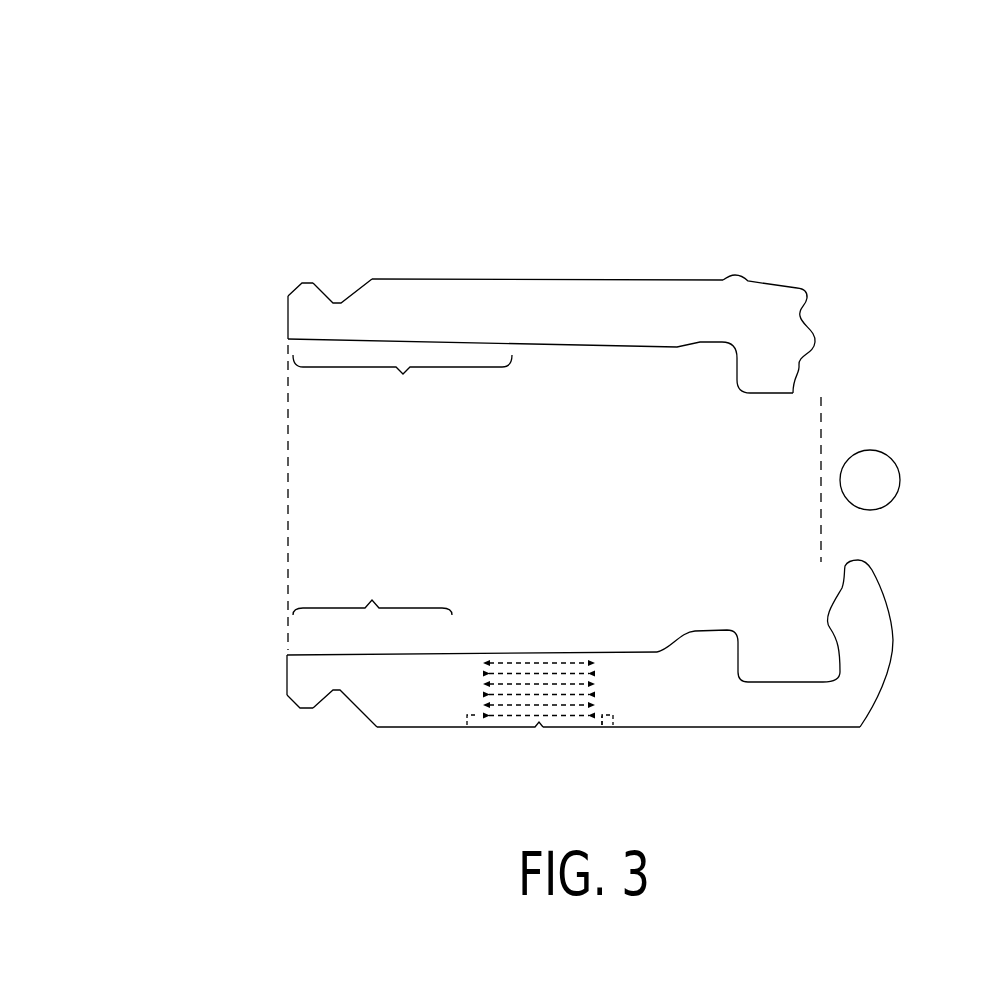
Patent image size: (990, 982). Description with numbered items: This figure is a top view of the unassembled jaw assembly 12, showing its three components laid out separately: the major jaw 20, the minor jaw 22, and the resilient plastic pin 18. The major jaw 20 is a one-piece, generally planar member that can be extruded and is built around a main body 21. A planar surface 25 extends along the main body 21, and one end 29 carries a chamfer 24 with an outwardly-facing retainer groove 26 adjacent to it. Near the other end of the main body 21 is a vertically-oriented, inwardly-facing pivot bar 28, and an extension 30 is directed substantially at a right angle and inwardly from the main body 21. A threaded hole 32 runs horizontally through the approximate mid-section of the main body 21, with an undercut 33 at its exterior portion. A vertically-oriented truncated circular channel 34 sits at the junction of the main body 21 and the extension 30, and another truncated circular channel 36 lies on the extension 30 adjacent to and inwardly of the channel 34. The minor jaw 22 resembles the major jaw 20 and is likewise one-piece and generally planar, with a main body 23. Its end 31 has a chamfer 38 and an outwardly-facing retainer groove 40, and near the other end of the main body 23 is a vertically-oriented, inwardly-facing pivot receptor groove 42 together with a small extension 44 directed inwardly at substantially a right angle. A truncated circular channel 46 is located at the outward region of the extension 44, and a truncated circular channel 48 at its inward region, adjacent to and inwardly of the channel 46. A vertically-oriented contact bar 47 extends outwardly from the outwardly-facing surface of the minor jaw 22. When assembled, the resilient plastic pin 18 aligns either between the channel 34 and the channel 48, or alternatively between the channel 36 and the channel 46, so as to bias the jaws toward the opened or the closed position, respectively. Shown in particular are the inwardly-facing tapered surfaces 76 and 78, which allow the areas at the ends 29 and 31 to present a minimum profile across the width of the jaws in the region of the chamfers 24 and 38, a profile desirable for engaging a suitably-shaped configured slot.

The jaw assembly 12 is at (226, 143).
The resilient plastic pin 18 is at (880, 468).
The major jaw 20 is at (681, 741).
The main body 21 is at (698, 703).
The minor jaw 22 is at (624, 266).
The main body 23 is at (650, 312).
The chamfer 24 is at (290, 700).
The planar surface 25 is at (812, 730).
The retainer groove 26 is at (335, 693).
The pivot bar 28 is at (715, 652).
The end 29 is at (287, 675).
The extension 30 is at (878, 633).
The end 31 is at (287, 313).
The threaded hole 32 is at (567, 697).
The undercut 33 is at (604, 726).
The truncated circular channel 34 is at (842, 668).
The truncated circular channel 36 is at (842, 593).
The chamfer 38 is at (293, 292).
The retainer groove 40 is at (340, 300).
The pivot receptor groove 42 is at (725, 345).
The small extension 44 is at (765, 378).
The truncated circular channel 46 is at (800, 313).
The contact bar 47 is at (743, 277).
The truncated circular channel 48 is at (800, 365).
The tapered surface 76 is at (372, 589).
The tapered surface 78 is at (402, 382).